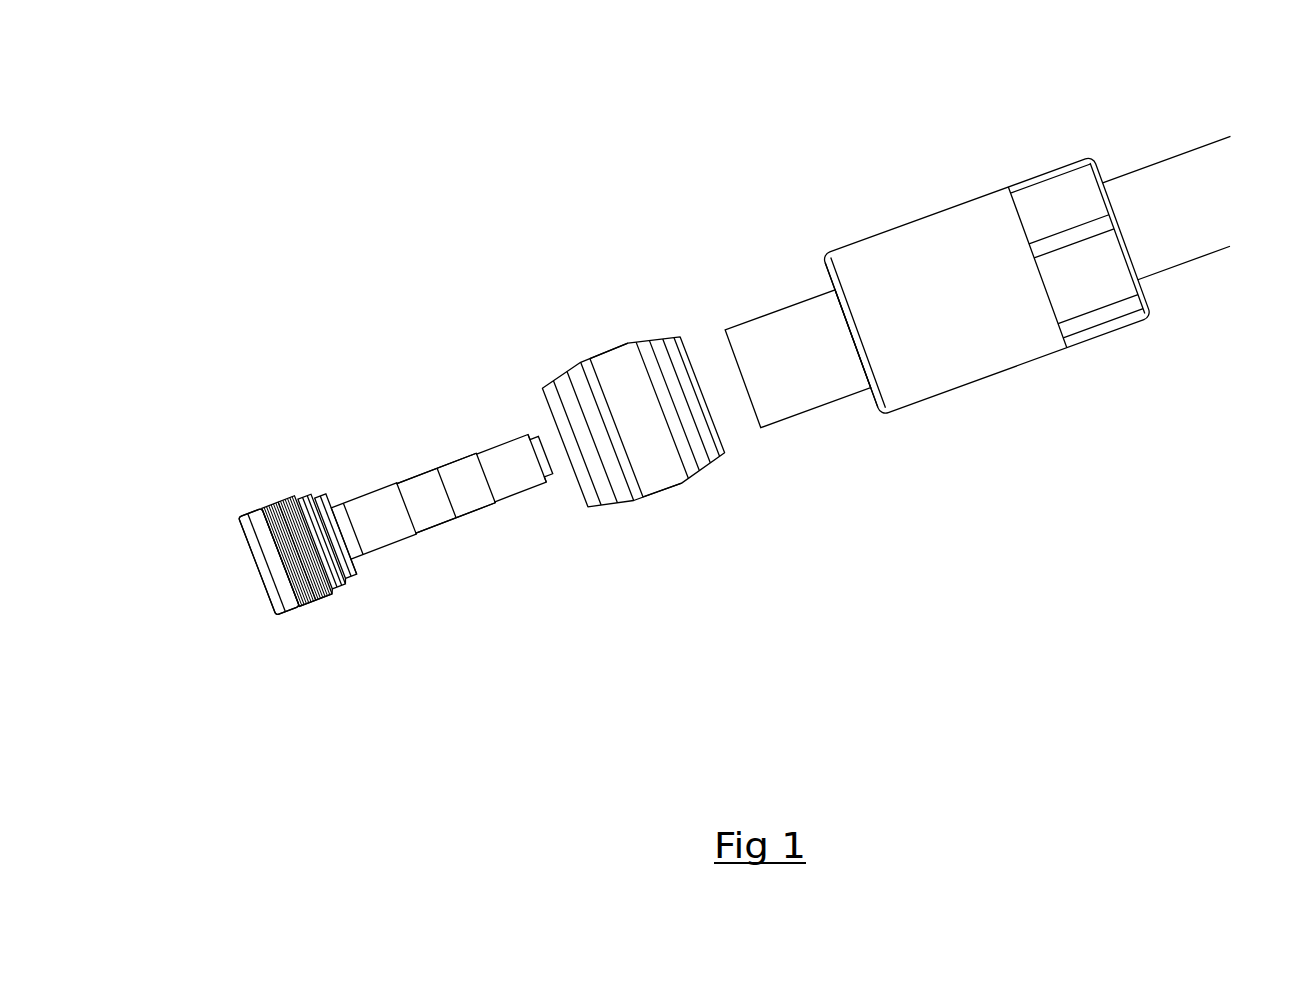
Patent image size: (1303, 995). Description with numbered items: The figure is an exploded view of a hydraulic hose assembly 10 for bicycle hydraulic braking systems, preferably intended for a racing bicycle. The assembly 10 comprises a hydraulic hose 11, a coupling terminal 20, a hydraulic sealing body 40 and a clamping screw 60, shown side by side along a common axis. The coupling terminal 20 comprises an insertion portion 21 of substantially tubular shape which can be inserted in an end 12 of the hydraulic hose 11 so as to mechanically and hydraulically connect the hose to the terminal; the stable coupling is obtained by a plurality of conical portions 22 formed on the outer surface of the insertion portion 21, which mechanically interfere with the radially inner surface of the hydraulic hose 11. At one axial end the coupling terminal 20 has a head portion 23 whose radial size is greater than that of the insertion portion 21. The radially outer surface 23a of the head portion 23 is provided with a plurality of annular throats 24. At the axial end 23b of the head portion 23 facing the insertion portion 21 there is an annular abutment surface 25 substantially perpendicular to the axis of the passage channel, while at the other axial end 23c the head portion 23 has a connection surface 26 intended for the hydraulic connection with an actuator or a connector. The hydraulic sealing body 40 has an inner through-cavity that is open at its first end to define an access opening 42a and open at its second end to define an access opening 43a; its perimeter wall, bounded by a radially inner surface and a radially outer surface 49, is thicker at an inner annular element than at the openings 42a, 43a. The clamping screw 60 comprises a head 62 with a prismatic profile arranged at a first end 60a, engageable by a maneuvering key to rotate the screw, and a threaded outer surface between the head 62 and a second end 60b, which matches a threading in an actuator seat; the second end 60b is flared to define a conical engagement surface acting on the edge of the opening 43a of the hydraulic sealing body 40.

The hydraulic hose assembly 10 is at (292, 215).
The hydraulic hose 11 is at (1206, 270).
The end of the hydraulic hose 12 is at (783, 408).
The coupling terminal 20 is at (381, 462).
The insertion portion 21 is at (474, 514).
The conical portions 22 is at (490, 470).
The head portion 23 is at (263, 530).
The radially outer surface of the head portion 23a is at (300, 603).
The axial end of the head portion 23b is at (343, 578).
The other axial end of the head portion 23c is at (273, 615).
The annular throats 24 is at (260, 507).
The annular abutment surface 25 is at (318, 500).
The connection surface 26 is at (250, 560).
The hydraulic sealing body 40 is at (569, 308).
The access opening 42a is at (547, 415).
The access opening 43a is at (693, 358).
The radially outer surface 49 is at (657, 475).
The clamping screw 60 is at (903, 215).
The first end of the clamping screw 60a is at (1093, 157).
The second end of the clamping screw 60b is at (873, 402).
The head 62 is at (1097, 305).